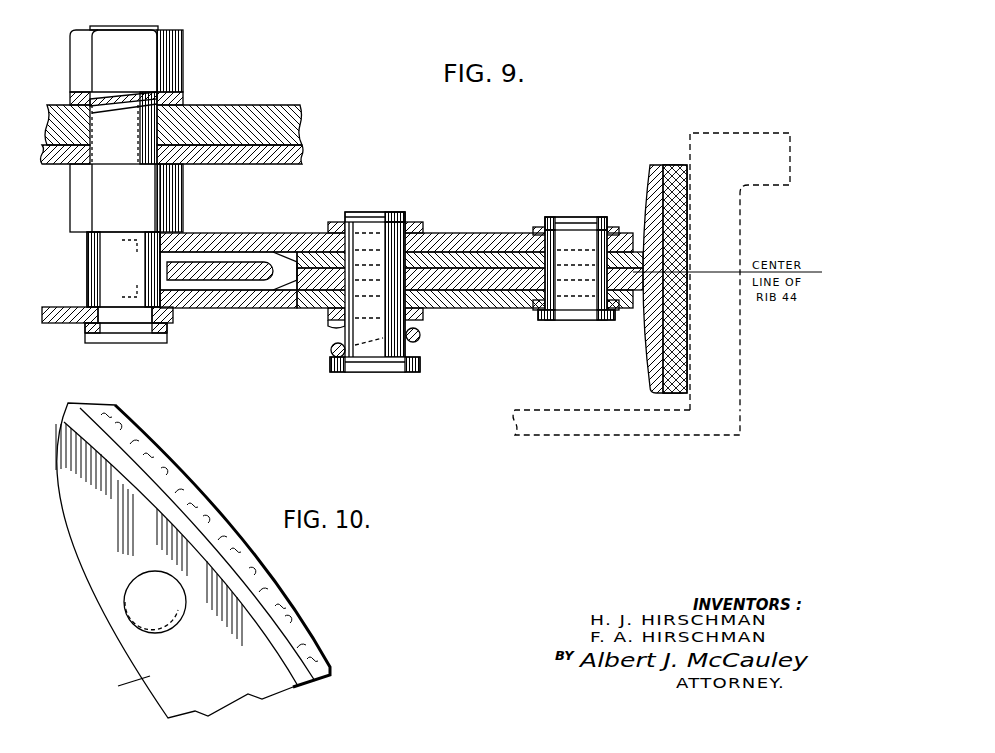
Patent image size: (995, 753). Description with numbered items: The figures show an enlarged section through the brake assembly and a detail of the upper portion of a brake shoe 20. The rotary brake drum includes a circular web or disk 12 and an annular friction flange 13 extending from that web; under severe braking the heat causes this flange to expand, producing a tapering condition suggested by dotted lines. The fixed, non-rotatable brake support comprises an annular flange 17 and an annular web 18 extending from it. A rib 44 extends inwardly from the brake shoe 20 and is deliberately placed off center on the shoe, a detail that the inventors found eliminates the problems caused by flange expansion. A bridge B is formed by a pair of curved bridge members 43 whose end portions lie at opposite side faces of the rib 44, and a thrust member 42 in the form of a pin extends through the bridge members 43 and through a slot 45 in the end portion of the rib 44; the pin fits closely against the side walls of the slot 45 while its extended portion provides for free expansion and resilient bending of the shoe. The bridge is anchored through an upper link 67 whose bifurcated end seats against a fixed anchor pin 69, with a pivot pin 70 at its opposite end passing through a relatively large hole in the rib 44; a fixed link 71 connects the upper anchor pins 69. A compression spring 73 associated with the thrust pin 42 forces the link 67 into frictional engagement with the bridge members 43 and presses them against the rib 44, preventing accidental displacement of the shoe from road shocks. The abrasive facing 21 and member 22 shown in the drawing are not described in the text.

In FIG. 9, the circular web 12 is at (600, 433).
In FIG. 9, the annular friction flange 13 is at (740, 370).
In FIG. 9, the annular flange 17 is at (233, 108).
In FIG. 9, the annular web 18 is at (302, 157).
In FIG. 9, the brake shoe 20 is at (647, 178).
In FIG. 10, the brake shoe 20 is at (193, 560).
In FIG. 9, the abrasive facing of disc 21 is at (672, 165).
In FIG. 10, the abrasive facing of disc 21 is at (302, 630).
In FIG. 9, the slot bar 22 is at (252, 272).
In FIG. 9, the thrust member 42 is at (373, 343).
In FIG. 10, the thrust member 42 is at (123, 607).
In FIG. 9, the bridge members 43 is at (457, 252).
In FIG. 9, the rib 44 is at (497, 265).
In FIG. 10, the rib 44 is at (119, 690).
In FIG. 10, the slot 45 is at (150, 633).
In FIG. 9, the upper link 67 is at (238, 233).
In FIG. 9, the fixed anchor pin 69 is at (95, 263).
In FIG. 9, the pivot pin 70 is at (578, 302).
In FIG. 9, the fixed link 71 is at (62, 323).
In FIG. 9, the compression spring 73 is at (418, 337).
In FIG. 9, the bridge B is at (288, 252).